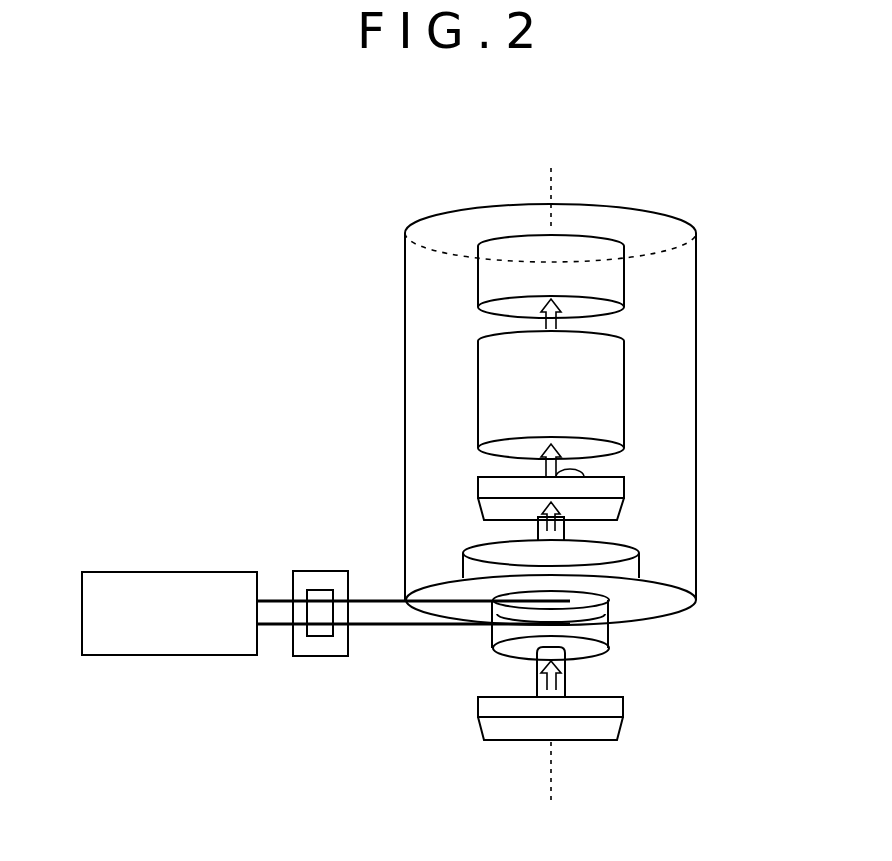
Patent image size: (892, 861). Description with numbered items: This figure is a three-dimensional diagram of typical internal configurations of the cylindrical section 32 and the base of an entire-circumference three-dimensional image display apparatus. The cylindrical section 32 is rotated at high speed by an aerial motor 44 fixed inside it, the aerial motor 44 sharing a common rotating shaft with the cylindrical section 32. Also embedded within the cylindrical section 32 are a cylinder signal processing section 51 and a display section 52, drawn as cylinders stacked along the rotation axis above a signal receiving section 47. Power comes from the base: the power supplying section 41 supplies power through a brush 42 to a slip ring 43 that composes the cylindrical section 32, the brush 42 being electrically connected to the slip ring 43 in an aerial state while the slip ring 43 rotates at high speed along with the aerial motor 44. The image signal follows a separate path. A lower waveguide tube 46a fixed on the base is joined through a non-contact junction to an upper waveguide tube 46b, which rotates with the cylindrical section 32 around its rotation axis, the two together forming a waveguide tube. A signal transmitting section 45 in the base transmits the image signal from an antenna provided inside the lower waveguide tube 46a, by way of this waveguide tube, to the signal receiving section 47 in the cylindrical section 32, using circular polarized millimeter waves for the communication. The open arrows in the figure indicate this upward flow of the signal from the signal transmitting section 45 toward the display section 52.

The cylindrical section 32 is at (633, 207).
The display section 52 is at (478, 283).
The cylinder signal processing section 51 is at (478, 385).
The signal receiving section 47 is at (570, 488).
The upper waveguide tube 46b is at (570, 530).
The aerial motor 44 is at (610, 558).
The slip ring 43 is at (593, 608).
The lower waveguide tube 46a is at (565, 682).
The signal transmitting section 45 is at (607, 727).
The power supplying section 41 is at (171, 572).
The brush 42 is at (383, 623).